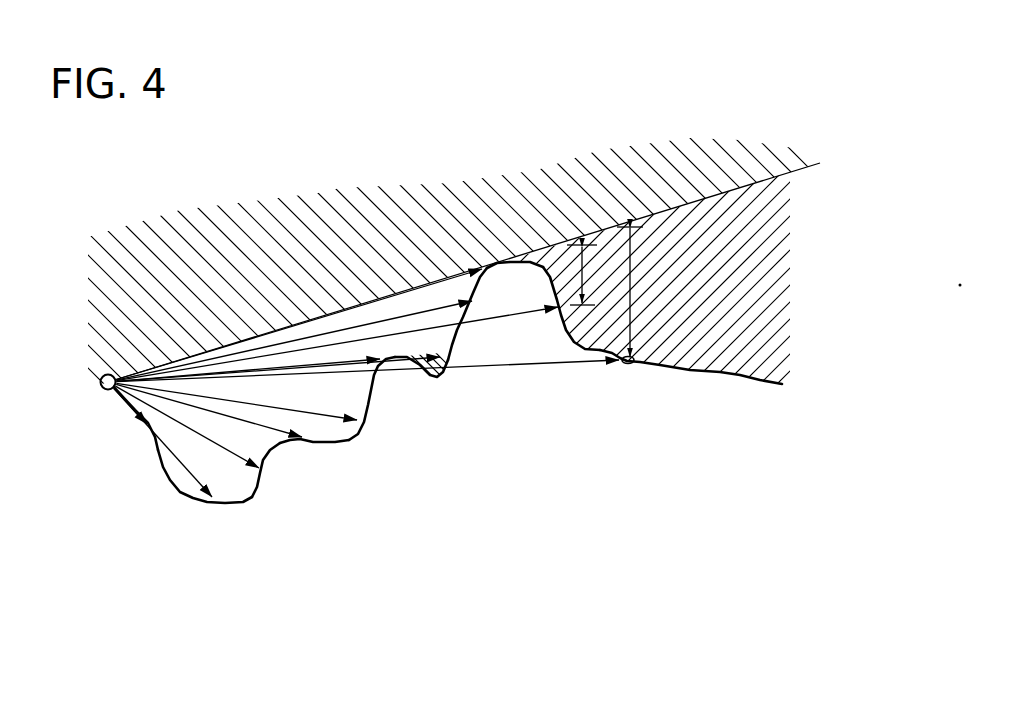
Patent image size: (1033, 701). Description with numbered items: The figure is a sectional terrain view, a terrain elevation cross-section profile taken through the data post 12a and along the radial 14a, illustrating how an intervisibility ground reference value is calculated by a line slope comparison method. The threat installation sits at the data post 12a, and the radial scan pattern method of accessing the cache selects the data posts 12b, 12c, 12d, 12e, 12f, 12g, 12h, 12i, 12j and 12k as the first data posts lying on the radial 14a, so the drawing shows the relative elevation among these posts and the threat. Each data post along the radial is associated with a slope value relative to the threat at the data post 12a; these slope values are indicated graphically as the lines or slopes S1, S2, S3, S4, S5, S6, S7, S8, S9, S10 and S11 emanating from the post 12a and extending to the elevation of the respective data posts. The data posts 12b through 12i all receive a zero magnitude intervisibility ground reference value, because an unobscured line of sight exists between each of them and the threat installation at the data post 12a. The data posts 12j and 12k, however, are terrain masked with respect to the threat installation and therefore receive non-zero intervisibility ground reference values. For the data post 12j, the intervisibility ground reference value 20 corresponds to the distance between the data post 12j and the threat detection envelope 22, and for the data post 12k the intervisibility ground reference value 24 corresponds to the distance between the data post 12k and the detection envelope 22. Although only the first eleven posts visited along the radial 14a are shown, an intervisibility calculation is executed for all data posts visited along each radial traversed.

The data post 12a is at (100, 383).
The data post 12b is at (151, 436).
The data post 12c is at (220, 502).
The data post 12d is at (263, 460).
The data post 12e is at (313, 443).
The data post 12f is at (369, 427).
The data post 12g is at (458, 365).
The data post 12h is at (478, 305).
The data post 12i is at (484, 265).
The data post 12j is at (547, 272).
The data post 12k is at (620, 364).
The radial 14a is at (290, 282).
The intervisibility ground reference value 20 is at (583, 270).
The threat detection envelope 22 is at (188, 245).
The intervisibility ground reference value 24 is at (633, 266).
The slope S1 is at (111, 413).
The slope S2 is at (188, 462).
The slope S3 is at (205, 436).
The slope S4 is at (220, 413).
The slope S5 is at (310, 413).
The slope S6 is at (375, 391).
The slope S7 is at (357, 340).
The slope S8 is at (383, 318).
The slope S9 is at (457, 273).
The slope S10 is at (505, 311).
The slope S11 is at (578, 366).